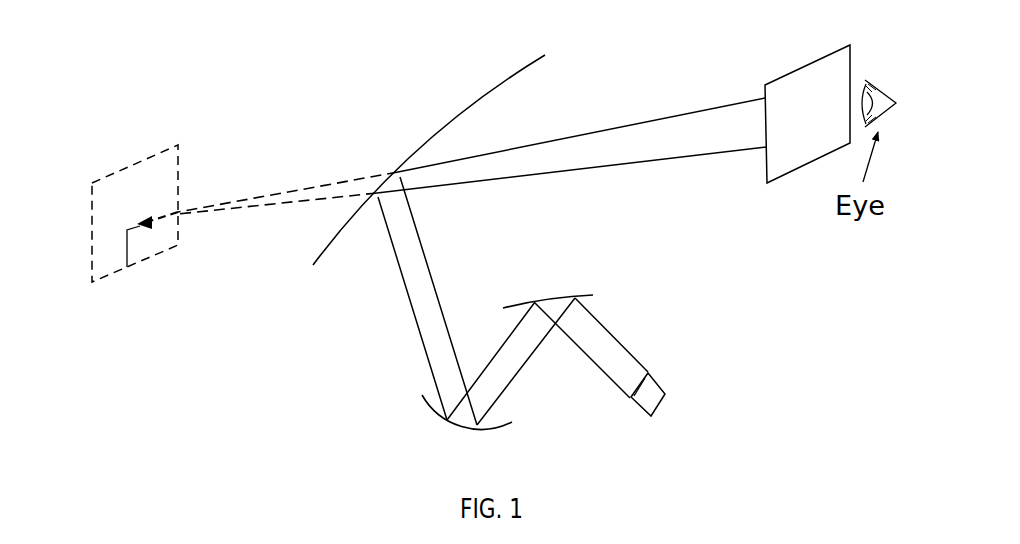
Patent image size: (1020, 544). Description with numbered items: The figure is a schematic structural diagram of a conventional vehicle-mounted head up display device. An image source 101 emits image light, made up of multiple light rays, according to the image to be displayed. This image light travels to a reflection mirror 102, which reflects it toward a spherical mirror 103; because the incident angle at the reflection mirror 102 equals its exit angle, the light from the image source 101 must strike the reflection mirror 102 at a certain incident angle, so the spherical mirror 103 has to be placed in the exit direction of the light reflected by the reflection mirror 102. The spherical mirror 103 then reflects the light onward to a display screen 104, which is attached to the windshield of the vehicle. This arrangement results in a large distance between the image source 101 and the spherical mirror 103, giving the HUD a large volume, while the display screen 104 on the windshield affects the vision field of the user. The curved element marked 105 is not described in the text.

The image source 101 is at (666, 378).
The reflection mirror 102 is at (573, 284).
The spherical mirror 103 is at (455, 430).
The display screen 104 is at (464, 159).
The semi-reflective surface of combiner 105 is at (457, 110).